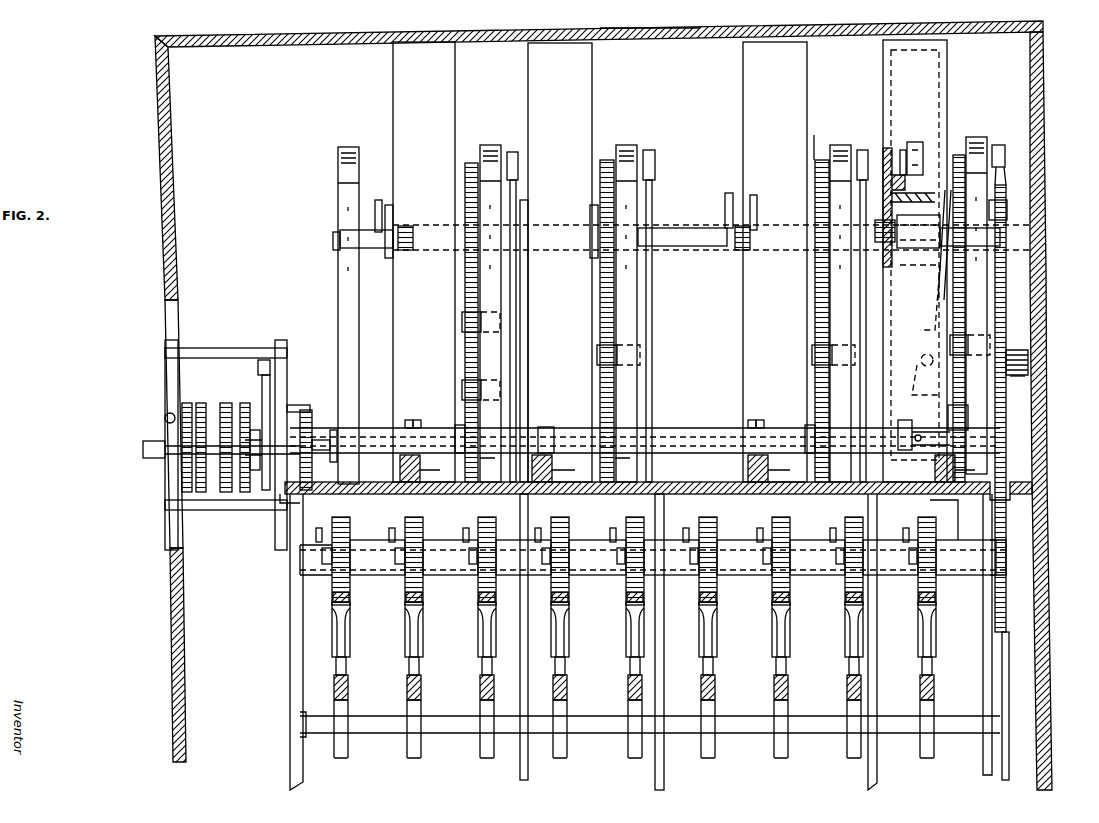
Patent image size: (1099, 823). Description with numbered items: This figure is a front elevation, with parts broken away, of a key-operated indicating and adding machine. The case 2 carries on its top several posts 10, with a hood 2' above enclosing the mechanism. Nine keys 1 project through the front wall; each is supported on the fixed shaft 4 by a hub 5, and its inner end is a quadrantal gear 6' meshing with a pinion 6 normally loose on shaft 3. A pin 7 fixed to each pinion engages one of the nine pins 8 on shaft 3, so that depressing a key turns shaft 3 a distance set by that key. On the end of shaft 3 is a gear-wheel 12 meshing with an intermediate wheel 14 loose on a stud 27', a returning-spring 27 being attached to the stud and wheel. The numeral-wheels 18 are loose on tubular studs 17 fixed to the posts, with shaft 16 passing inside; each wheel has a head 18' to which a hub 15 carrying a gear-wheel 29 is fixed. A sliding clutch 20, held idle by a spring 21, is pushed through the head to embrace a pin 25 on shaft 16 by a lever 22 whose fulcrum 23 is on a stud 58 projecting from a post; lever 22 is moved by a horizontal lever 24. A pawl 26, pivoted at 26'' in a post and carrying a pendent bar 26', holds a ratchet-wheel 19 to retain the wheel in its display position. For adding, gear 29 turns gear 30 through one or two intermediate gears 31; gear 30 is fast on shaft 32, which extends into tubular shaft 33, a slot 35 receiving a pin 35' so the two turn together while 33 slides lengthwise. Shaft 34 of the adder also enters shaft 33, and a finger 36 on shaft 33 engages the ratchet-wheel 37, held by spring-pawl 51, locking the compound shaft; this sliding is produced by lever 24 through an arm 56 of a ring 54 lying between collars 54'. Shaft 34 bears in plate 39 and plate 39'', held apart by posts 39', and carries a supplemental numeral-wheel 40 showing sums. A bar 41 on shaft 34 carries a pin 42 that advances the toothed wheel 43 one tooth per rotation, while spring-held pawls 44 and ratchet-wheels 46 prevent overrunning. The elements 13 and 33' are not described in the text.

The key 1 is at (334, 688).
The case 2 is at (610, 405).
The hood 2' is at (650, 45).
The shaft 3 is at (1006, 549).
The shaft 4 is at (950, 130).
The hub 5 is at (814, 135).
The pinion 6 is at (625, 425).
The quadrantal gear 6' is at (684, 637).
The pin 7 is at (396, 530).
The pin 8 is at (335, 556).
The post 10 is at (349, 147).
The gear-wheel 12 is at (1006, 595).
The collar 13 is at (390, 256).
The intermediate wheel 14 is at (1008, 430).
The hub 15 is at (915, 275).
The shaft 16 is at (333, 242).
The tubular stud 17 is at (447, 257).
The numeral-wheel 18 is at (668, 261).
The head 18' is at (900, 194).
The ratchet-wheel 19 is at (920, 160).
The sliding clutch 20 is at (380, 200).
The spring 21 is at (918, 231).
The lever 22 is at (452, 425).
The fulcrum 23 is at (920, 370).
The lever 24 is at (445, 494).
The pin 25 is at (395, 215).
The pawl 26 is at (921, 135).
The pendent bar 26' is at (795, 484).
The pivot 26'' is at (748, 161).
The returning-spring 27 is at (1041, 351).
The stud 27' is at (1045, 366).
The gear-wheel 29 is at (465, 189).
The gear 30 is at (420, 463).
The intermediate gear 31 is at (463, 322).
The shaft 32 is at (970, 410).
The tubular shaft 33 is at (645, 428).
The collar 33' is at (557, 428).
The shaft 34 is at (143, 454).
The slot 35 is at (938, 500).
The pin 35' is at (915, 500).
The finger 36 is at (330, 438).
The ratchet-wheel 37 is at (312, 468).
The plate 39 is at (206, 445).
The post 39' is at (226, 428).
The plate 39'' is at (293, 362).
The supplemental numeral-wheel 40 is at (178, 426).
The bar 41 is at (255, 470).
The pin 42 is at (222, 403).
The toothed wheel 43 is at (243, 403).
The spring-held pawl 44 is at (272, 396).
The ratchet-wheel 46 is at (187, 403).
The spring-pawl 51 is at (300, 410).
The ring 54 is at (565, 410).
The collar 54' is at (588, 406).
The arm 56 is at (400, 460).
The stud 58 is at (935, 355).